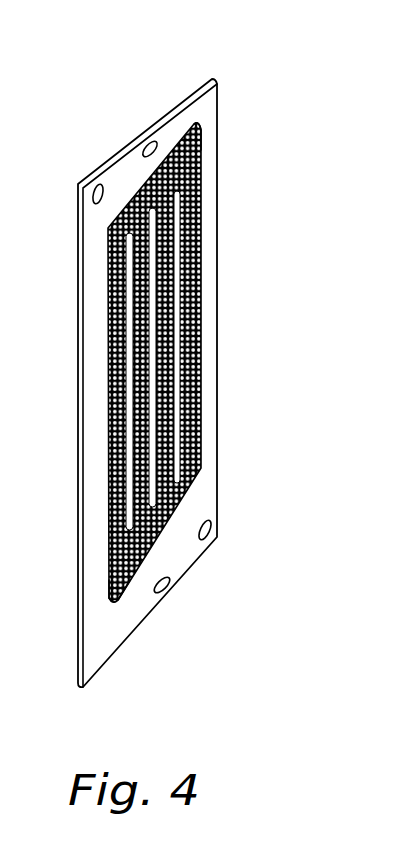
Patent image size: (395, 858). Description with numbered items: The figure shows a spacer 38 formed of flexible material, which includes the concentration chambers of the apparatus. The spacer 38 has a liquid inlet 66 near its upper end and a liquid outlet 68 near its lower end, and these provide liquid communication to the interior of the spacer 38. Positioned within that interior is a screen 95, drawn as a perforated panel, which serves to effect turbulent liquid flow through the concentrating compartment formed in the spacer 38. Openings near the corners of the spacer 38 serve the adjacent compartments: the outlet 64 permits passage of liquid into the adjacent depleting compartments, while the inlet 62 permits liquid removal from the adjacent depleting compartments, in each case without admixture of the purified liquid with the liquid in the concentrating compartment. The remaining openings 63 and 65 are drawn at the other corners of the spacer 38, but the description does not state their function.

The spacer 38 is at (218, 165).
The inlet 62 is at (90, 178).
The mounting hole 63 is at (165, 593).
The outlet 64 is at (208, 540).
The mounting hole 65 is at (150, 141).
The liquid inlet 66 is at (203, 140).
The liquid outlet 68 is at (113, 596).
The screen 95 is at (108, 392).